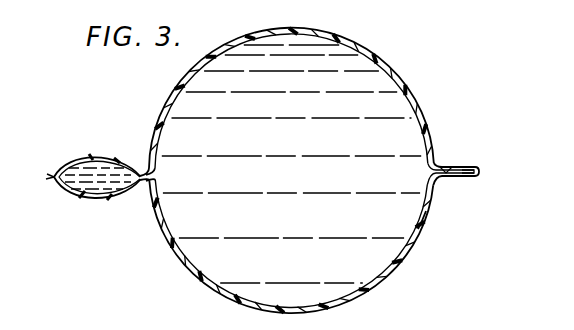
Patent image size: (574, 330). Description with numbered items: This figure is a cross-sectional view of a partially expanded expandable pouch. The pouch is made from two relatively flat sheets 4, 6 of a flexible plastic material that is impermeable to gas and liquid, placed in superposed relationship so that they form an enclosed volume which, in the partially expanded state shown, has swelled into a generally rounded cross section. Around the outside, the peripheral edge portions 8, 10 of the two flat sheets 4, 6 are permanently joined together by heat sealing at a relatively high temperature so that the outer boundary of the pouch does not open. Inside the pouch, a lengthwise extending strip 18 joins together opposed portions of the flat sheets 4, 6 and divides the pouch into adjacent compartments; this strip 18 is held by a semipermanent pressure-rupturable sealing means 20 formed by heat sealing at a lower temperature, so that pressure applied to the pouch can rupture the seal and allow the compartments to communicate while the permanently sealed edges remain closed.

The flat sheet 4 is at (425, 117).
The flat sheet 6 is at (420, 229).
The peripheral edge portion 8 is at (456, 167).
The peripheral edge portion 10 is at (465, 178).
The lengthwise extending strip 18 is at (142, 173).
The semipermanent pressure-rupturable sealing means 20 is at (140, 188).